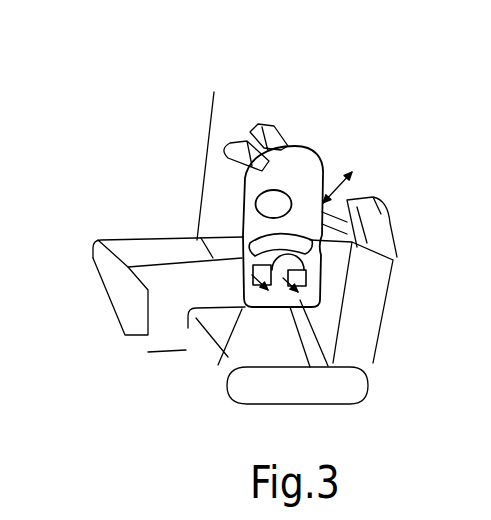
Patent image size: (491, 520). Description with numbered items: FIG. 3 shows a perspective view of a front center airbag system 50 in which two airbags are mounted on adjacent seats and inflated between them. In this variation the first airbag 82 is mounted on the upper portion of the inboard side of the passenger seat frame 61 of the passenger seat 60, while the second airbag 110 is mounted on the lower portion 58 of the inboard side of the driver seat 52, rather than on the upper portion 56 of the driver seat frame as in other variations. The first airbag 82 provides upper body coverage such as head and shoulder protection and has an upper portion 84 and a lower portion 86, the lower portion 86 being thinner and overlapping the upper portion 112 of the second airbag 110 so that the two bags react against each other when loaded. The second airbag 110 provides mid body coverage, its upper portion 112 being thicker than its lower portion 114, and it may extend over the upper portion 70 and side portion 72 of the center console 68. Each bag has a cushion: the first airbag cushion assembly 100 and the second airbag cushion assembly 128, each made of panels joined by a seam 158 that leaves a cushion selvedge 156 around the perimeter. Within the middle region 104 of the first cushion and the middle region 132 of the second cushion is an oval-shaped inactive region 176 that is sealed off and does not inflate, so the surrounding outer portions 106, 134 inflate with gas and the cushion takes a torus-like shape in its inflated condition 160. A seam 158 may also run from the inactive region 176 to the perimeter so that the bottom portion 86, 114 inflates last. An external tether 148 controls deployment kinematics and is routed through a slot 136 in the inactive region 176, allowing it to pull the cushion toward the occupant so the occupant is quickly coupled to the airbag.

The front center airbag system 50 is at (315, 112).
The driver seat 52 is at (363, 317).
The upper portion 56 is at (335, 203).
The lower portion 58 is at (293, 313).
The passenger seat 60 is at (490, 64).
The passenger seat frame 61 is at (490, 25).
The center console 68 is at (159, 328).
The upper portion 70 is at (165, 275).
The side portion 72 is at (130, 315).
The first airbag 82 is at (254, 99).
The upper portion 84 is at (294, 181).
The lower portion 86 is at (350, 171).
The first airbag cushion assembly 100 is at (291, 167).
The middle region 104 is at (218, 254).
The outer portion 106 is at (322, 190).
The second airbag 110 is at (159, 229).
The upper portion 112 is at (290, 262).
The lower portion 114 is at (283, 340).
The second airbag cushion assembly 128 is at (265, 242).
The middle region 132 is at (262, 208).
The outer portion 134 is at (292, 240).
The slot 136 is at (275, 296).
The external tether 148 is at (262, 265).
The cushion selvedge 156 is at (302, 147).
The seam 158 is at (333, 147).
The inflated condition 160 is at (297, 182).
The inactive region 176 is at (226, 166).